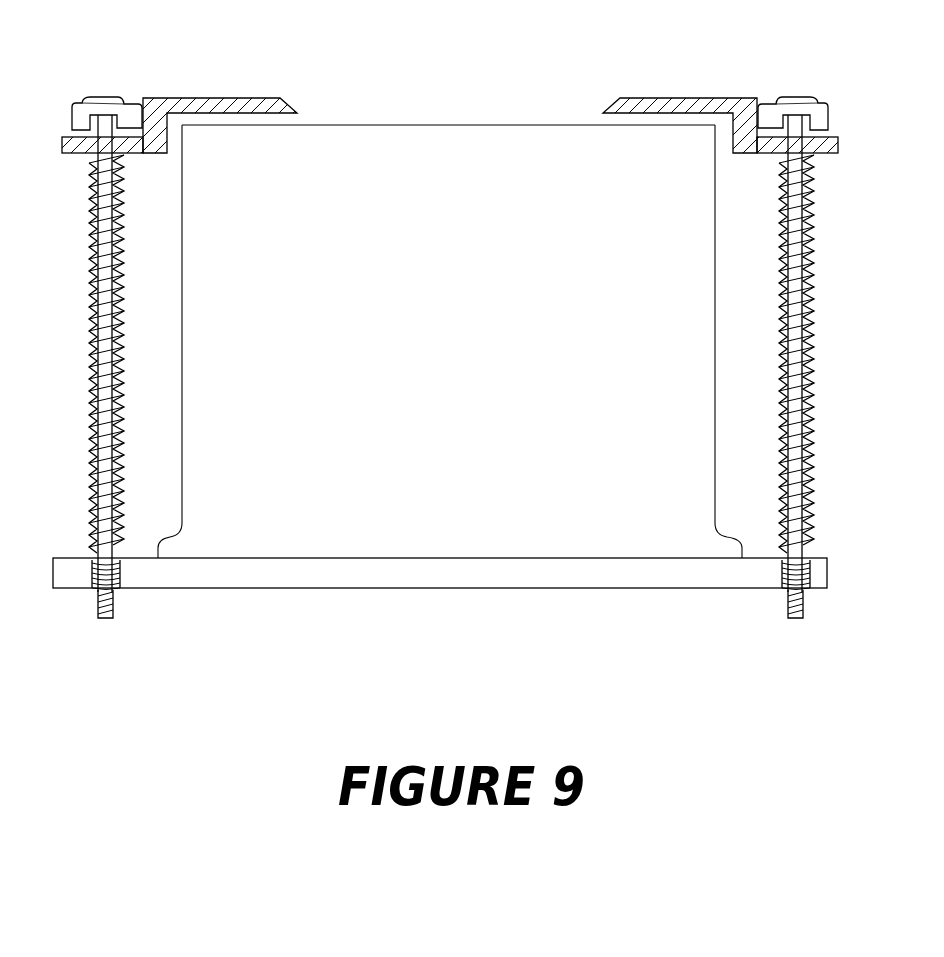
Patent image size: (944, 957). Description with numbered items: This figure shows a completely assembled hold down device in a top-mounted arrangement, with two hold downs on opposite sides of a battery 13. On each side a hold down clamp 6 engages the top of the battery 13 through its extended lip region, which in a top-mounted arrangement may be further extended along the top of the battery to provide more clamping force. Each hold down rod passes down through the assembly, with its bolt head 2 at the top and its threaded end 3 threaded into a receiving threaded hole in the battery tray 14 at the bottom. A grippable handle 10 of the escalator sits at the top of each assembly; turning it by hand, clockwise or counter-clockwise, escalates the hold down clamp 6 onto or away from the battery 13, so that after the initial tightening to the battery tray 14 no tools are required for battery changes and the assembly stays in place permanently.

The bolt head 2 is at (70, 105).
The threaded end 3 is at (95, 600).
The hold down clamp 6 is at (193, 103).
The grippable handle 10 is at (128, 113).
The battery 13 is at (437, 146).
The battery tray 14 is at (642, 580).